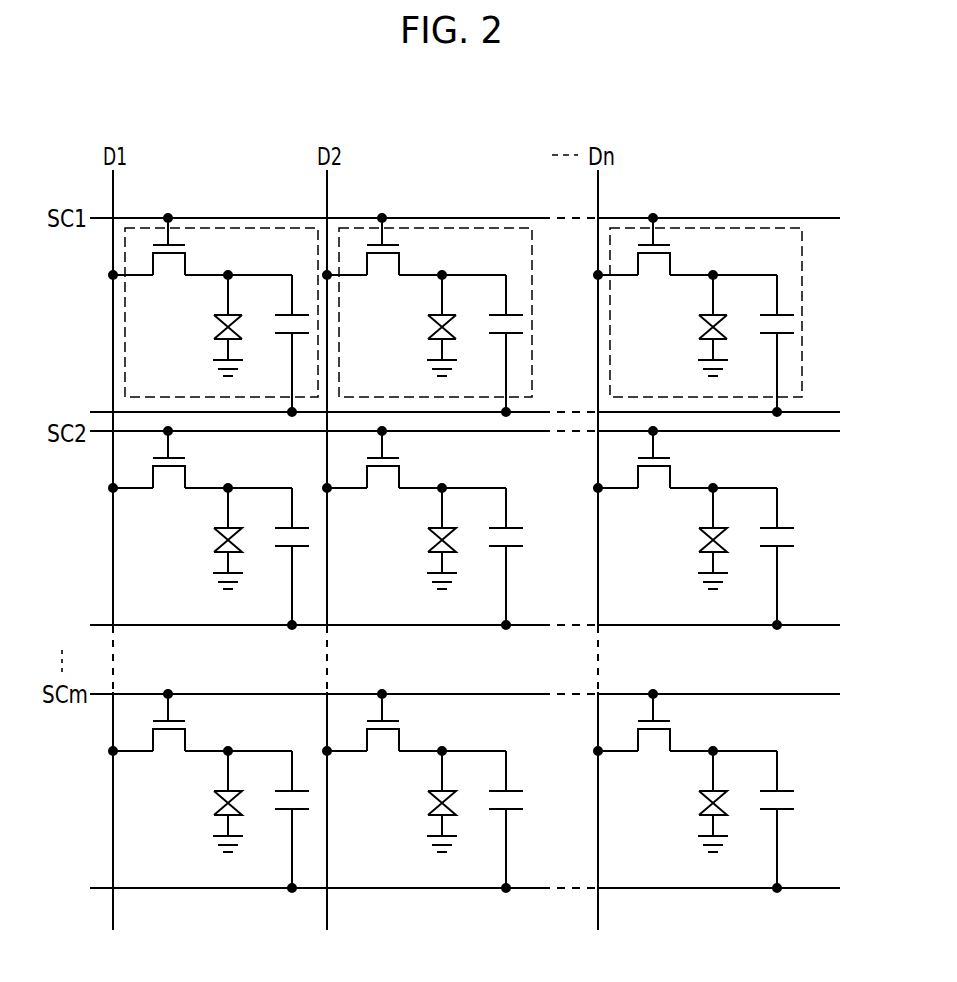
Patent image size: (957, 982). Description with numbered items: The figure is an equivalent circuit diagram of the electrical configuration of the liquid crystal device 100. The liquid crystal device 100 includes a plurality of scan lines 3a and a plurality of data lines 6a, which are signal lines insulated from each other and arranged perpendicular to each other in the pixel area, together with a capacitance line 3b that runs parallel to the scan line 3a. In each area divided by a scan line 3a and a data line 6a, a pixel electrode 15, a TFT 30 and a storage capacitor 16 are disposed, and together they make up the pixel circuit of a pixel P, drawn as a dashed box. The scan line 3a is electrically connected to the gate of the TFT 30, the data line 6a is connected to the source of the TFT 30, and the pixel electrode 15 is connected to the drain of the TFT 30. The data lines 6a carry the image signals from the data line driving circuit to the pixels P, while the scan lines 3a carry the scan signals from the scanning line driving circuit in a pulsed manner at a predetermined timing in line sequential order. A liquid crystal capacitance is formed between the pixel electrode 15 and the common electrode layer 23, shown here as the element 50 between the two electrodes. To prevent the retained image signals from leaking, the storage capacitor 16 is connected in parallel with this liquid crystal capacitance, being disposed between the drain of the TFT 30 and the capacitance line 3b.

The liquid crystal device 100 is at (828, 101).
The data line 6a is at (113, 187).
The scan line 3a is at (829, 216).
The capacitance line 3b is at (829, 410).
The pixel P is at (288, 226).
The TFT 30 is at (198, 246).
The memory / light-emitting element 50 is at (436, 325).
The pixel electrode 15 is at (226, 313).
The common electrode layer 23 is at (226, 340).
The storage capacitor 16 is at (284, 344).